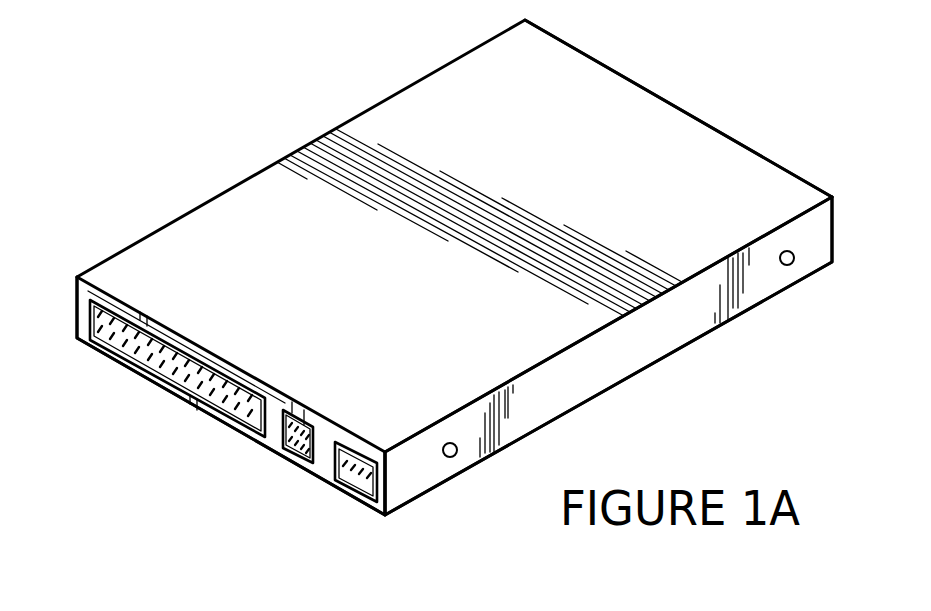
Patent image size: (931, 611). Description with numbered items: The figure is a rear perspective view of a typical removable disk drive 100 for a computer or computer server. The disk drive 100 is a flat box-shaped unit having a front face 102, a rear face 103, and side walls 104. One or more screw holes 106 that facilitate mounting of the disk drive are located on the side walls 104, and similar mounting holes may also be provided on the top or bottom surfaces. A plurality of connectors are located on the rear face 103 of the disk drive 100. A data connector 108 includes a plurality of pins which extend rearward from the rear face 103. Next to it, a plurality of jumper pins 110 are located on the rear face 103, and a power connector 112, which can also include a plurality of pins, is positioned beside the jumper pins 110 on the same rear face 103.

The disk drive 100 is at (315, 143).
The front face 102 is at (667, 100).
The rear face 103 is at (84, 305).
The side walls 104 is at (658, 340).
The screw holes 106 is at (795, 263).
The data connector 108 is at (147, 360).
The jumper pins 110 is at (293, 443).
The power connector 112 is at (353, 482).